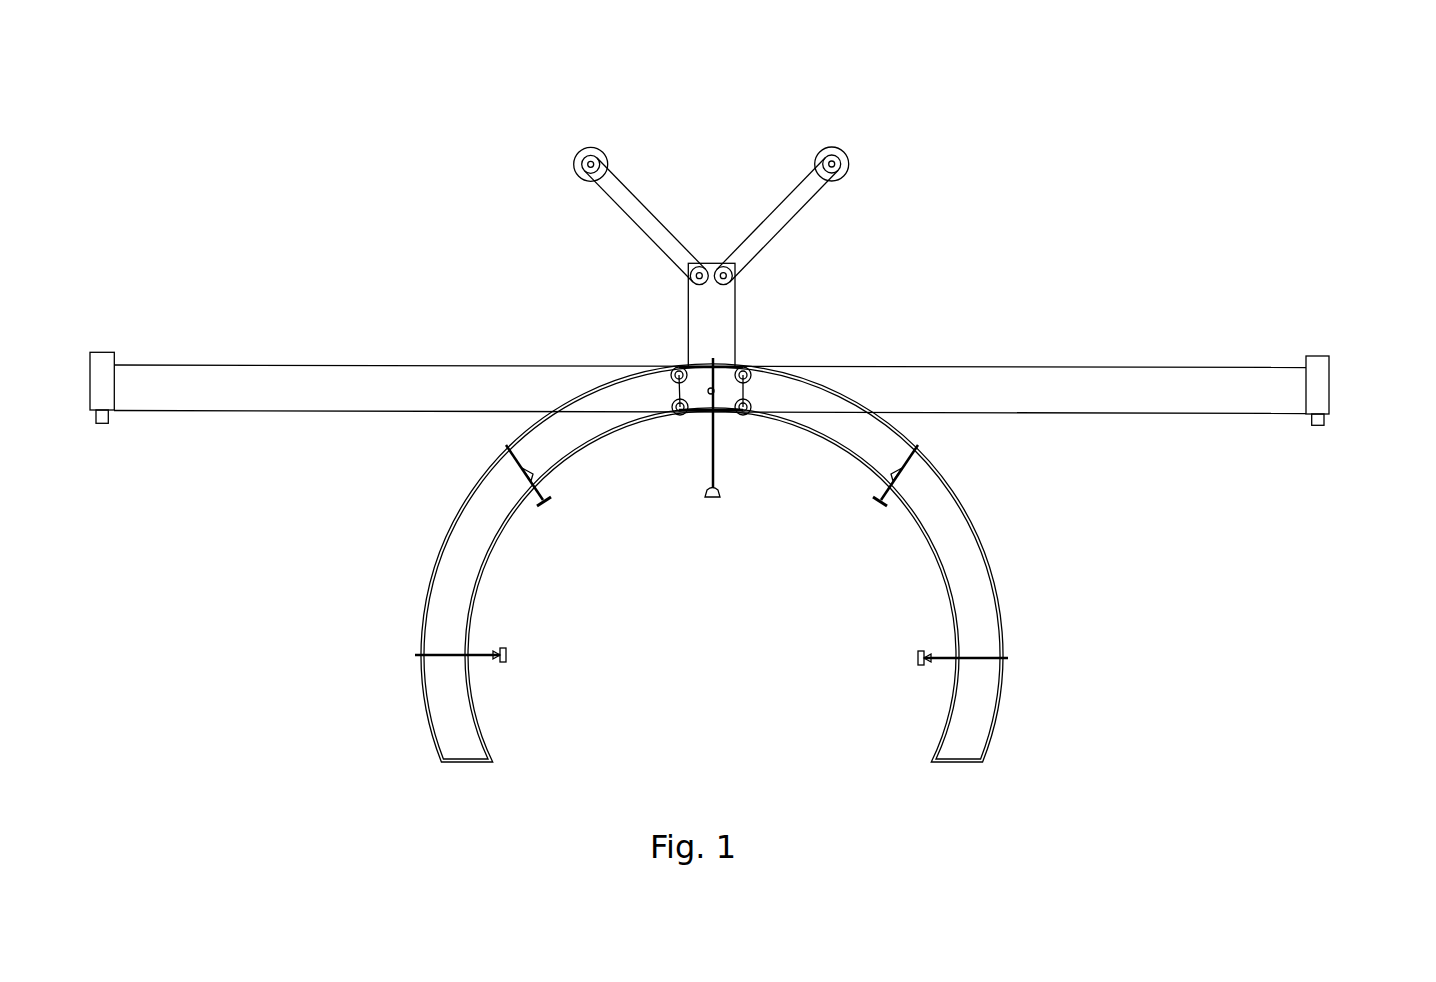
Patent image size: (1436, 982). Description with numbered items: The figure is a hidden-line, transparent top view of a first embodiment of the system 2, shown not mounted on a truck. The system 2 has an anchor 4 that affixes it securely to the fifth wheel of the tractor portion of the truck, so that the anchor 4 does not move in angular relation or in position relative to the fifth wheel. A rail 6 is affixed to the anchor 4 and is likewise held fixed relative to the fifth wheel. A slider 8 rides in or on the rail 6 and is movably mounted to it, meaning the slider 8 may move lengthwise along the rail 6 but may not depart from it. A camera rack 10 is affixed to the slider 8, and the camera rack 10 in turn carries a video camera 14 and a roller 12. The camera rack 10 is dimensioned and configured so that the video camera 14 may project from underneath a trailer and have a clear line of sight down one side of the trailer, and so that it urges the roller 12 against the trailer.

The system 2 is at (755, 391).
The anchor 4 is at (758, 475).
The rail 6 is at (749, 563).
The slider 8 is at (666, 370).
The camera rack 10 is at (710, 351).
The roller 12 is at (767, 211).
The video camera 14 is at (755, 360).